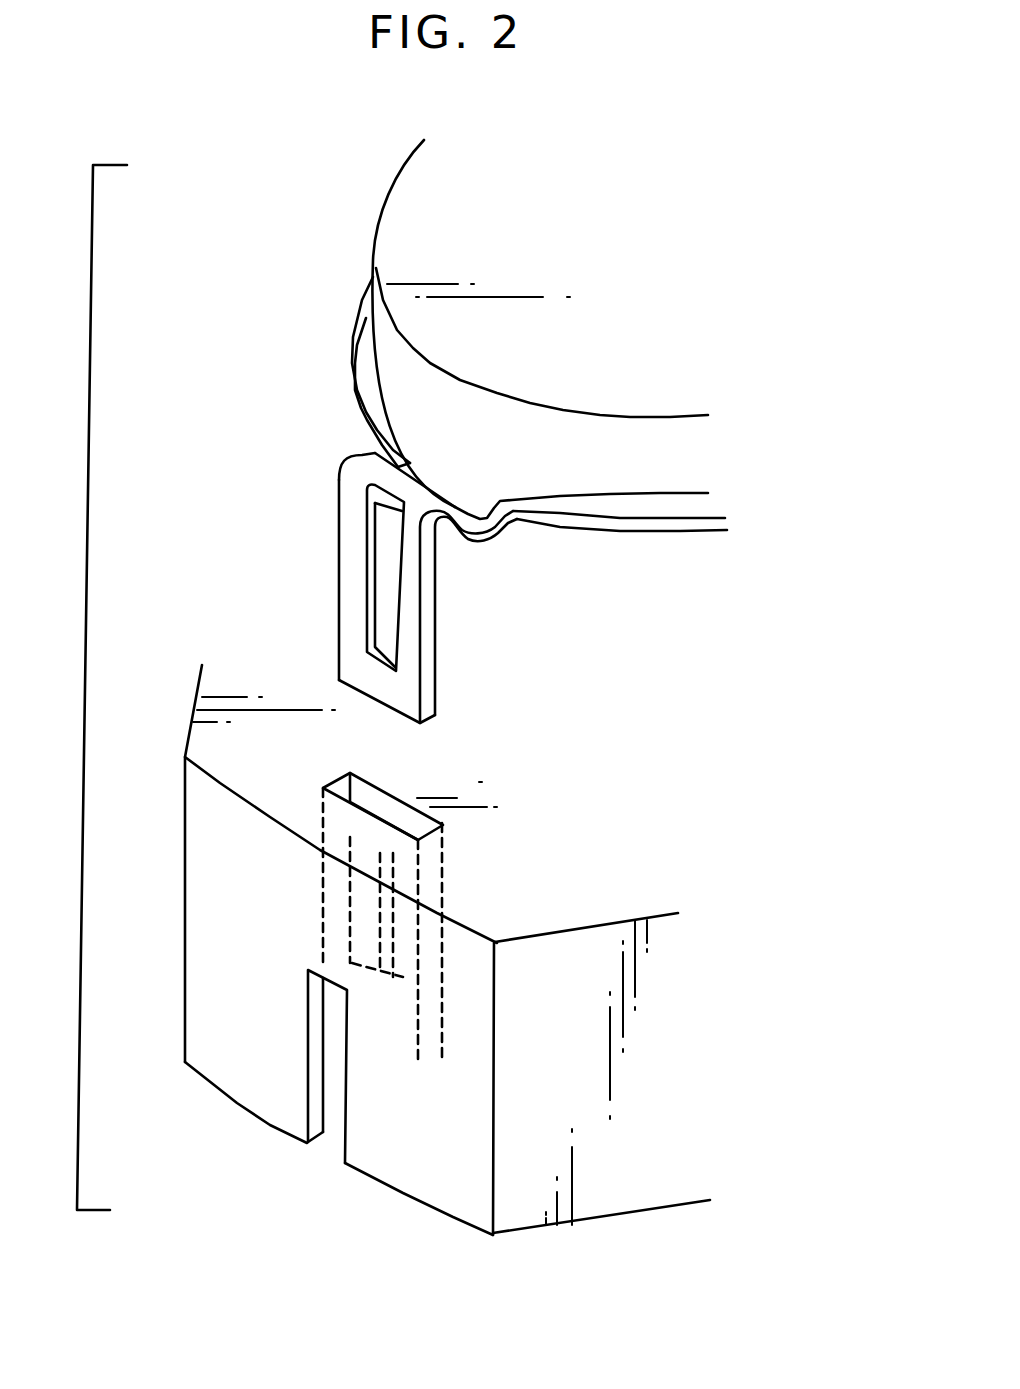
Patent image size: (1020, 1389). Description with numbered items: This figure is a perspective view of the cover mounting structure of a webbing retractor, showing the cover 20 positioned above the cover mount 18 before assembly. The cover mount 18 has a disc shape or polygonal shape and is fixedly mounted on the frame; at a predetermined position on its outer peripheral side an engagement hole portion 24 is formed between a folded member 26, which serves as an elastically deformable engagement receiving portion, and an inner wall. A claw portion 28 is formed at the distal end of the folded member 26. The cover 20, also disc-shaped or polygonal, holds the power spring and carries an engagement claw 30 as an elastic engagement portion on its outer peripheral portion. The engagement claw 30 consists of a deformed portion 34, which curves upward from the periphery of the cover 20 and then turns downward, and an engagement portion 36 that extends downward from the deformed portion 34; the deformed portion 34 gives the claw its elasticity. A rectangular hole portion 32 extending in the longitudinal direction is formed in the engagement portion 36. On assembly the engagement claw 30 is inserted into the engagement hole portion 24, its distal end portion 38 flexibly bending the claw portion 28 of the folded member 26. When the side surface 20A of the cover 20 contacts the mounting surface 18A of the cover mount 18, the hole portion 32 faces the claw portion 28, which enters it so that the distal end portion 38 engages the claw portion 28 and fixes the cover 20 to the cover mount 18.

The cover mount 18 is at (186, 809).
The mounting surface 18A is at (567, 886).
The cover 20 is at (402, 230).
The side surface 20A is at (602, 477).
The engagement hole portion 24 is at (390, 812).
The folded member 26 is at (363, 927).
The claw portion 28 is at (383, 967).
The engagement claw 30 is at (347, 508).
The hole portion 32 is at (370, 603).
The deformed portion 34 is at (360, 462).
The engagement portion 36 is at (413, 573).
The distal end portion 38 is at (403, 688).